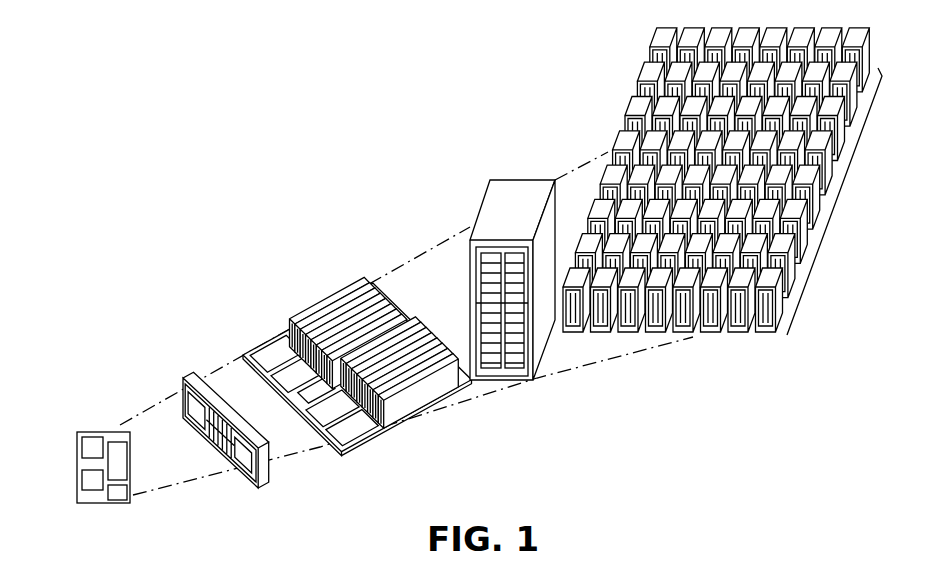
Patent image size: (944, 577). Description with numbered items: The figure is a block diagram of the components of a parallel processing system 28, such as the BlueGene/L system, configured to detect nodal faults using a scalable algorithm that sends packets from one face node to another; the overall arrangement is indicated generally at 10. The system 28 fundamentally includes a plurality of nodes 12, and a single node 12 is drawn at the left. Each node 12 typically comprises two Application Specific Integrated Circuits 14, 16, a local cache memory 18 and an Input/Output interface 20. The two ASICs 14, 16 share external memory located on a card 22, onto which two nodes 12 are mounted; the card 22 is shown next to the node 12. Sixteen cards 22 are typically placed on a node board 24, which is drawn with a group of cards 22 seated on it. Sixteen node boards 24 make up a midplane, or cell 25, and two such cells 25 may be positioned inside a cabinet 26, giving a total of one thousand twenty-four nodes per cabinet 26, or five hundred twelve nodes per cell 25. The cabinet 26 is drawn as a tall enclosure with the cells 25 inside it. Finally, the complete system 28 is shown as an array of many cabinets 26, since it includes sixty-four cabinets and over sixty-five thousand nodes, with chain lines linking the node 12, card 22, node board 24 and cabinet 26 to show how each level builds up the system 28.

The computer system 10 is at (262, 184).
The node 12 is at (99, 426).
The Application Specific Integrated Circuit 14 is at (88, 447).
The Application Specific Integrated Circuit 16 is at (88, 482).
The local cache memory 18 is at (118, 460).
The Input/Output interface 20 is at (117, 495).
The card 22 is at (344, 304).
The node board 24 is at (352, 446).
The cell 25 is at (550, 220).
The cabinet 26 is at (507, 186).
The parallel processing system 28 is at (802, 306).